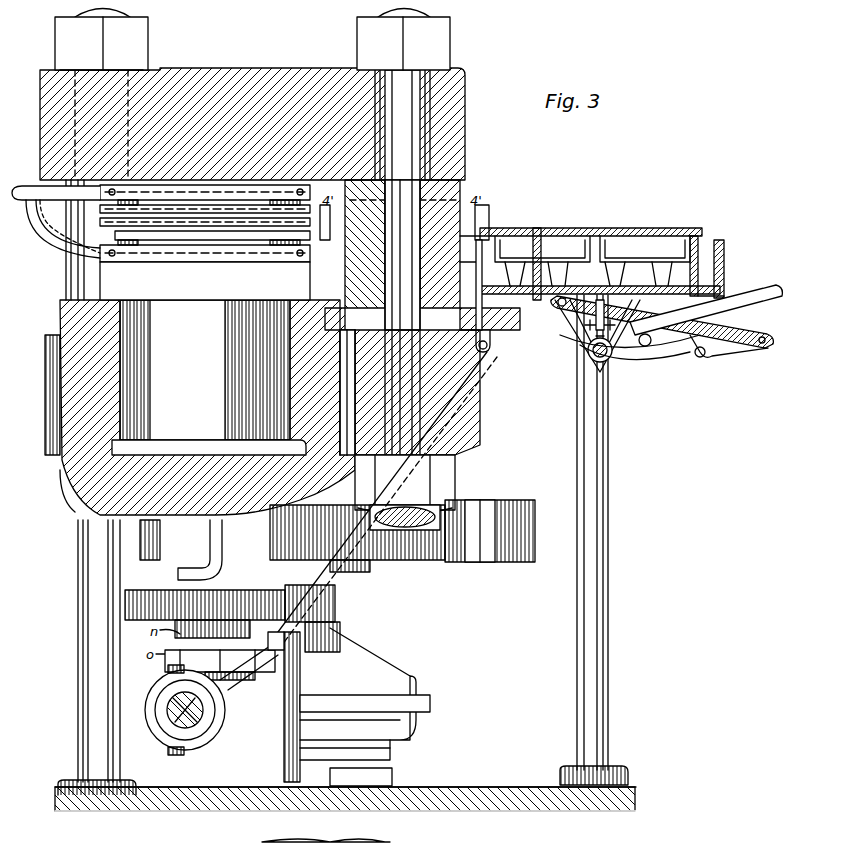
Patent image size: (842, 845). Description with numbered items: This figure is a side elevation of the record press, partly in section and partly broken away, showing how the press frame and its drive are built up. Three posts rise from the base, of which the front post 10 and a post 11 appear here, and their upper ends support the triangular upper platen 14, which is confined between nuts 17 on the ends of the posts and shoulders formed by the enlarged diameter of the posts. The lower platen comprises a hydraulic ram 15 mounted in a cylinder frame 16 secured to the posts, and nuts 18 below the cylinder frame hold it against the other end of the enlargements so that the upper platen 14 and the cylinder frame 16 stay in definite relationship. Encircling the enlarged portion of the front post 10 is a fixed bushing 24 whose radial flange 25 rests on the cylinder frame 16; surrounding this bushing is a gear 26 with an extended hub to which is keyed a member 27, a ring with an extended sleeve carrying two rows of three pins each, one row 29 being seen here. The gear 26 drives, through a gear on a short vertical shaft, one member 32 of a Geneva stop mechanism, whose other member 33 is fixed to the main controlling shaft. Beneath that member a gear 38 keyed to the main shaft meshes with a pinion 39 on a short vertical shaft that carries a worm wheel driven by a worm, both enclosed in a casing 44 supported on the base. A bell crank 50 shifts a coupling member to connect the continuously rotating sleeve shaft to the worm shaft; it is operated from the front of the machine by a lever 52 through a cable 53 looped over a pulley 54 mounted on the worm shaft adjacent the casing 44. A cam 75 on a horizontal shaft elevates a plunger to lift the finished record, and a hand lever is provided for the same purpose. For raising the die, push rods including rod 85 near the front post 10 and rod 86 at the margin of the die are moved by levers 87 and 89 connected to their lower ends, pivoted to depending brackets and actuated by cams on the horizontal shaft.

The front post 10 is at (402, 317).
The post 11 is at (76, 686).
The upper platen 14 is at (245, 72).
The hydraulic ram 15 is at (209, 377).
The cylinder frame 16 is at (66, 318).
The nuts 17 is at (148, 38).
The nuts 18 is at (58, 487).
The fixed bushing 24 is at (462, 192).
The radial flange 25 is at (489, 332).
The gear 26 is at (330, 278).
The member 27 is at (520, 242).
The row of pins 29 is at (488, 222).
The Geneva stop member 32 is at (455, 565).
The Geneva stop member 33 is at (360, 572).
The gear 38 is at (125, 600).
The pinion 39 is at (336, 612).
The casing 44 is at (432, 703).
The bell crank 50 is at (298, 692).
The lever 52 is at (770, 292).
The cable 53 is at (478, 392).
The pulley 54 is at (185, 740).
The cam 75 is at (760, 340).
The push rod 85 is at (540, 335).
The push rod 86 is at (698, 242).
The lever 87 is at (578, 368).
The lever 89 is at (690, 364).